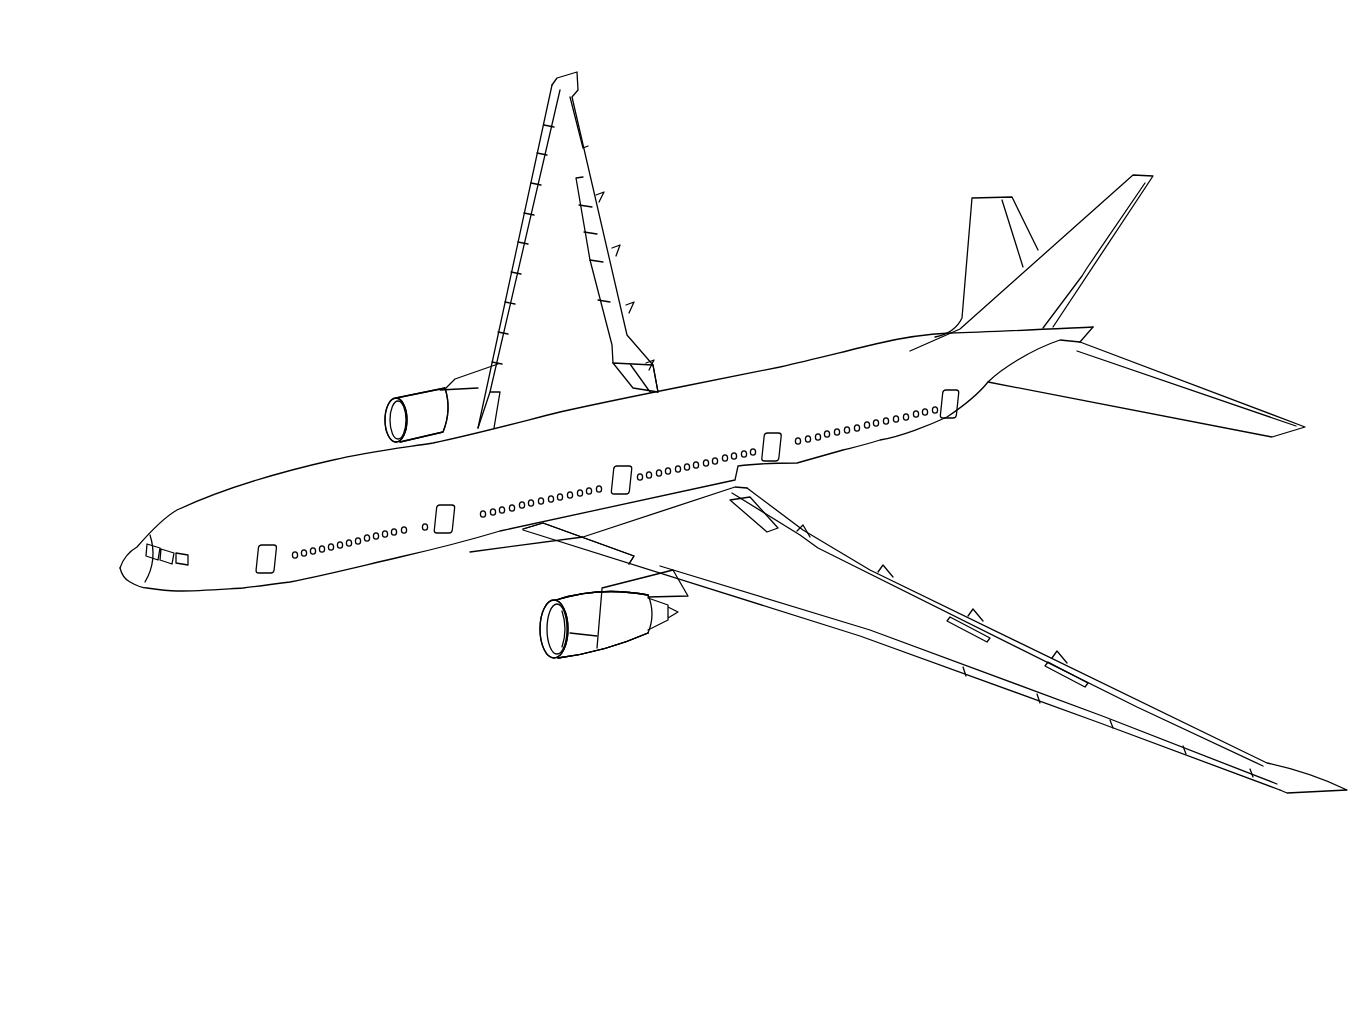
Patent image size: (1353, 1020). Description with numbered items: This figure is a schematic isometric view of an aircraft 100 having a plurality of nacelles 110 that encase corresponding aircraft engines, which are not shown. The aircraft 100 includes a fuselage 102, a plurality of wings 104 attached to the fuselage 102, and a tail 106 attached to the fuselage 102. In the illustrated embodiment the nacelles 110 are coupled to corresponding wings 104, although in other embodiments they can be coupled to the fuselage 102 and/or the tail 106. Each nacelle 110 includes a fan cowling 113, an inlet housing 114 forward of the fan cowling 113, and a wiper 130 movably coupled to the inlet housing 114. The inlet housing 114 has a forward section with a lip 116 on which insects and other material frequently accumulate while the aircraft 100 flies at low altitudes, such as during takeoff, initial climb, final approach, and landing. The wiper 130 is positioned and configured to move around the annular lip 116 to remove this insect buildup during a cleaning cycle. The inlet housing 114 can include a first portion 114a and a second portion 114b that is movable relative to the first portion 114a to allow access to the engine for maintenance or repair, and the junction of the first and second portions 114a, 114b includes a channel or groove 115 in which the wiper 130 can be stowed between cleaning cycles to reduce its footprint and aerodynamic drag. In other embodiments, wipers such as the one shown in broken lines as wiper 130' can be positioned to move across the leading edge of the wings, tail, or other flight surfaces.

The aircraft 100 is at (148, 393).
The fuselage 102 is at (336, 558).
The wings 104 is at (570, 248).
The tail 106 is at (1097, 217).
The nacelle 110 is at (408, 350).
The fan cowling 113 is at (458, 400).
The inlet housing 114 is at (412, 394).
The first portion 114a is at (568, 596).
The second portion 114b is at (582, 655).
The groove 115 is at (586, 650).
The lip 116 is at (385, 419).
The wiper 130 is at (508, 638).
The wiper 130' is at (615, 539).